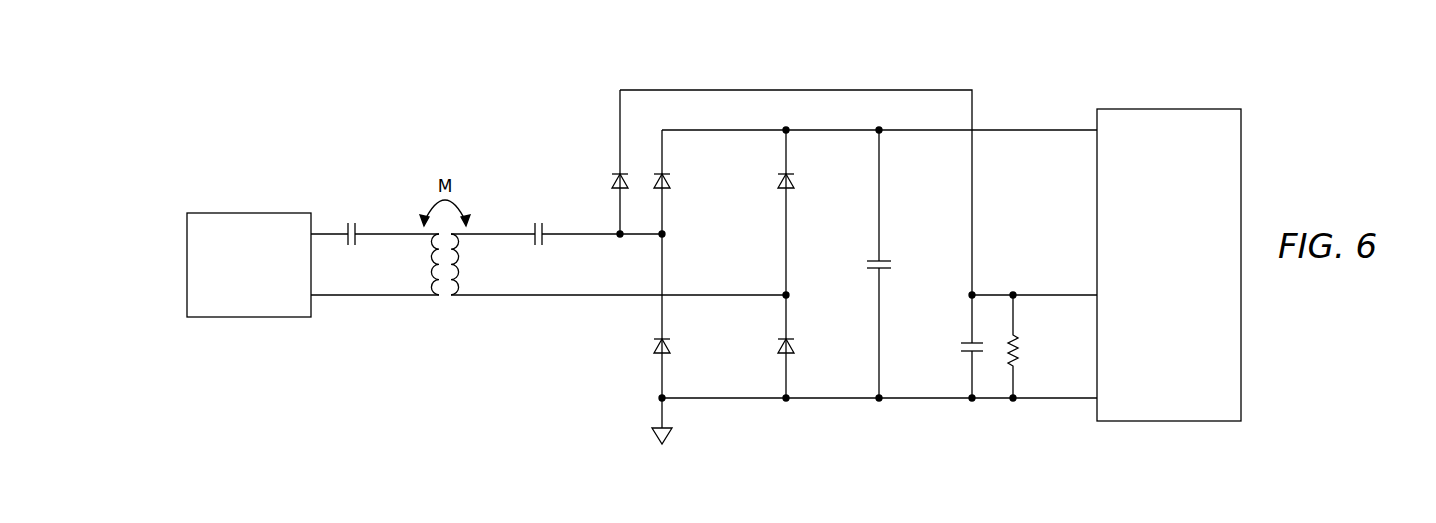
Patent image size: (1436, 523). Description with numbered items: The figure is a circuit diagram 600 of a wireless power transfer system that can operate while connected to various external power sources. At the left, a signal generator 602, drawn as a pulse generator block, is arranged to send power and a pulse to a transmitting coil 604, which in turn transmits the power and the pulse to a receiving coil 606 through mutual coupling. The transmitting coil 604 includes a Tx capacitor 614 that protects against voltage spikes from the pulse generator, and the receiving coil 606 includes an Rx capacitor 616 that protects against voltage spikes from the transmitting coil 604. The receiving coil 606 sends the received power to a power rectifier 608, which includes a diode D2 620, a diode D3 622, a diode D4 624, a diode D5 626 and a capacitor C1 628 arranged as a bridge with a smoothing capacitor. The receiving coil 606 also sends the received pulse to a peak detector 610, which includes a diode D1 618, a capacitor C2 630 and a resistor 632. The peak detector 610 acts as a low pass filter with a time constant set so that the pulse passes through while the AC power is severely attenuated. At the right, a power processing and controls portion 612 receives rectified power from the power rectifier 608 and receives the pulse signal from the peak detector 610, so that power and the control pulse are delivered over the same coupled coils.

The circuit diagram 600 is at (980, 62).
The signal generator 602 is at (250, 212).
The transmitting coil 604 is at (437, 297).
The receiving coil 606 is at (453, 297).
The power rectifier 608 is at (725, 293).
The peak detector 610 is at (1033, 293).
The power processing and controls portion 612 is at (1149, 335).
The Tx capacitor 614 is at (352, 220).
The Rx capacitor 616 is at (537, 220).
The diode 1 (D1) 618 is at (613, 177).
The diode 2 (D2) 620 is at (670, 178).
The diode 3 (D3) 622 is at (654, 347).
The diode 4 (D4) 624 is at (794, 178).
The diode 5 (D5) 626 is at (778, 347).
The capacitor 1 (C1) 628 is at (893, 265).
The capacitor 2 (C2) 630 is at (957, 347).
The resistor 632 is at (1020, 350).